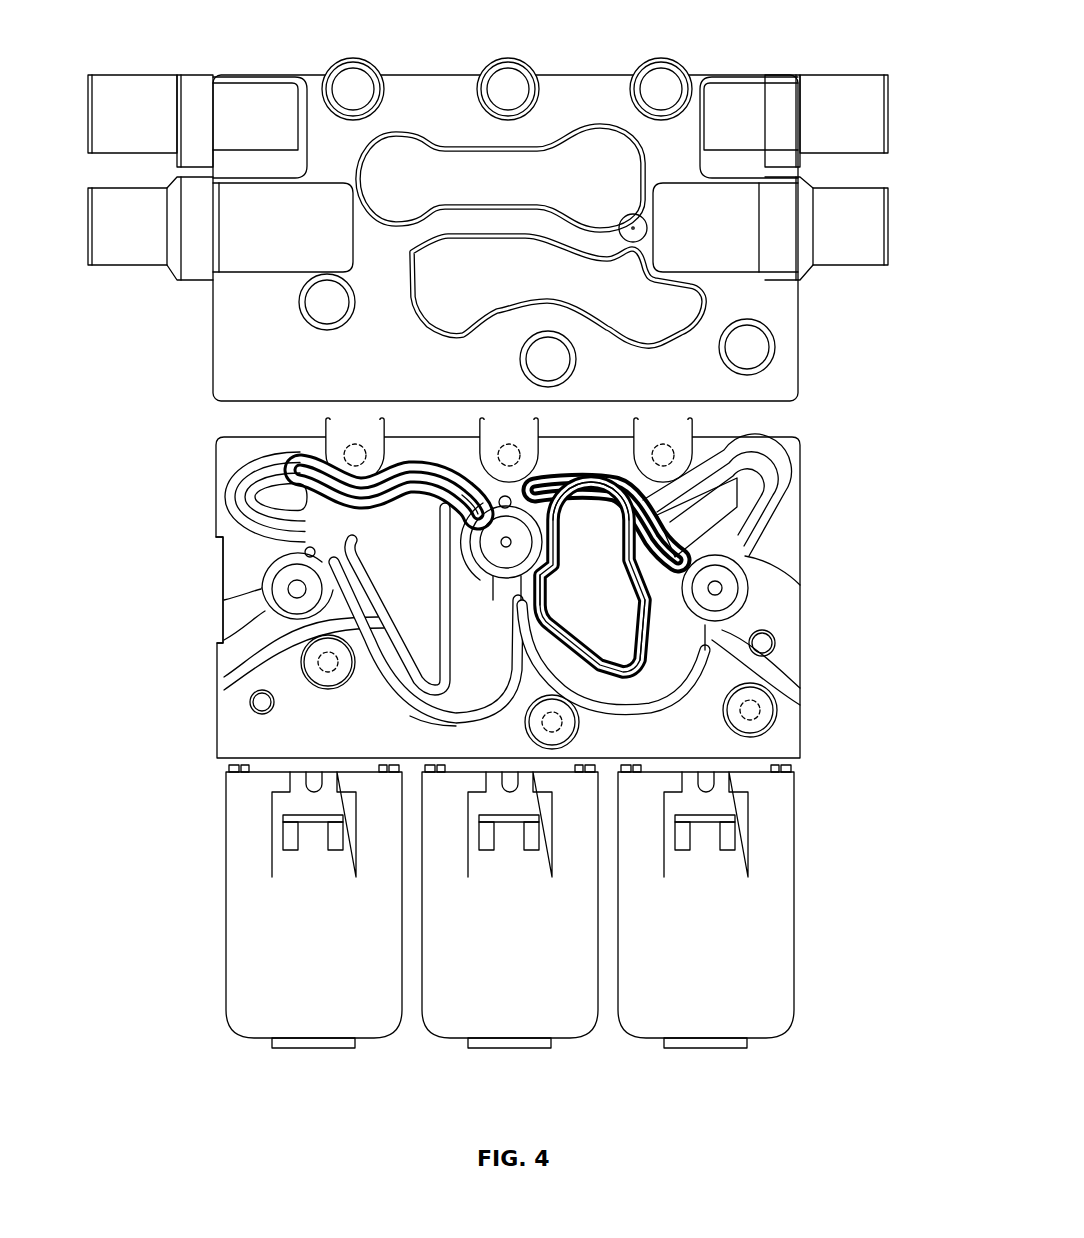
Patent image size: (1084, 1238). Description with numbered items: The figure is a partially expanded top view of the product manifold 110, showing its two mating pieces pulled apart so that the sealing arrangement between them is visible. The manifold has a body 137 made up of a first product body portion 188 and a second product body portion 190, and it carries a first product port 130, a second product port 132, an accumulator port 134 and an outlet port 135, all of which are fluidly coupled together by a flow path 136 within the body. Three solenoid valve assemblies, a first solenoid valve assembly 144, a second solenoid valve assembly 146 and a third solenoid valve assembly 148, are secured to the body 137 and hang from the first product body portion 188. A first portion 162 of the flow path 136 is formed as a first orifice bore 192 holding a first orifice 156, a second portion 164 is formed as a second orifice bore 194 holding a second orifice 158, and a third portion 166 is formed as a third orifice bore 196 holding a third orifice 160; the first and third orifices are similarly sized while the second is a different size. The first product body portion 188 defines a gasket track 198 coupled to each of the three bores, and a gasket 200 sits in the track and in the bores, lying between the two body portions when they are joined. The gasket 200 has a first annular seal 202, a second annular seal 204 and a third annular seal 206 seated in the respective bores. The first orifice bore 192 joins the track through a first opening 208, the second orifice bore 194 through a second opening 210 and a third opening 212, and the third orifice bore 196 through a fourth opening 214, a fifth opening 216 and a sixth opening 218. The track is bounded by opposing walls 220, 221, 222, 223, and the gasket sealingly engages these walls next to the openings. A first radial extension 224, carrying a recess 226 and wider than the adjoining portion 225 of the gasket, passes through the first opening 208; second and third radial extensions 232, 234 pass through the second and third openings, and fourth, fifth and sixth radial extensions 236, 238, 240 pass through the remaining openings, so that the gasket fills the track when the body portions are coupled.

The product manifold 110 is at (868, 46).
The first product port 130 is at (875, 120).
The second product port 132 is at (875, 240).
The accumulator port 134 is at (100, 240).
The outlet port 135 is at (101, 118).
The flow path 136 is at (722, 590).
The body 137 is at (225, 592).
The first solenoid valve assembly 144 is at (390, 1003).
The second solenoid valve assembly 146 is at (586, 1003).
The third solenoid valve assembly 148 is at (784, 1003).
The first orifice 156 is at (262, 606).
The second orifice 158 is at (480, 535).
The third orifice 160 is at (726, 603).
The first portion of the flow path 162 is at (288, 588).
The second portion of the flow path 164 is at (410, 473).
The third portion of the flow path 166 is at (752, 497).
The first product body portion 188 is at (225, 758).
The second product body portion 190 is at (225, 383).
The first orifice bore 192 is at (268, 622).
The second orifice bore 194 is at (475, 560).
The third orifice bore 196 is at (680, 612).
The gasket track 198 is at (392, 705).
The gasket 200 is at (462, 722).
The first annular seal 202 is at (262, 590).
The second annular seal 204 is at (553, 562).
The third annular seal 206 is at (750, 545).
The first opening 208 is at (265, 565).
The second opening 210 is at (472, 502).
The third opening 212 is at (521, 580).
The fourth opening 214 is at (690, 592).
The fifth opening 216 is at (722, 630).
The sixth opening 218 is at (745, 557).
The wall of the gasket track 220 is at (365, 676).
The wall of the gasket track 221 is at (292, 640).
The wall of the gasket track 222 is at (655, 708).
The wall of the gasket track 223 is at (762, 470).
The first radial extension 224 is at (240, 462).
The portion of the gasket 225 is at (305, 550).
The recess 226 is at (248, 480).
The second radial extension 232 is at (607, 473).
The third radial extension 234 is at (514, 630).
The fourth radial extension 236 is at (652, 575).
The fifth radial extension 238 is at (720, 640).
The sixth radial extension 240 is at (750, 556).